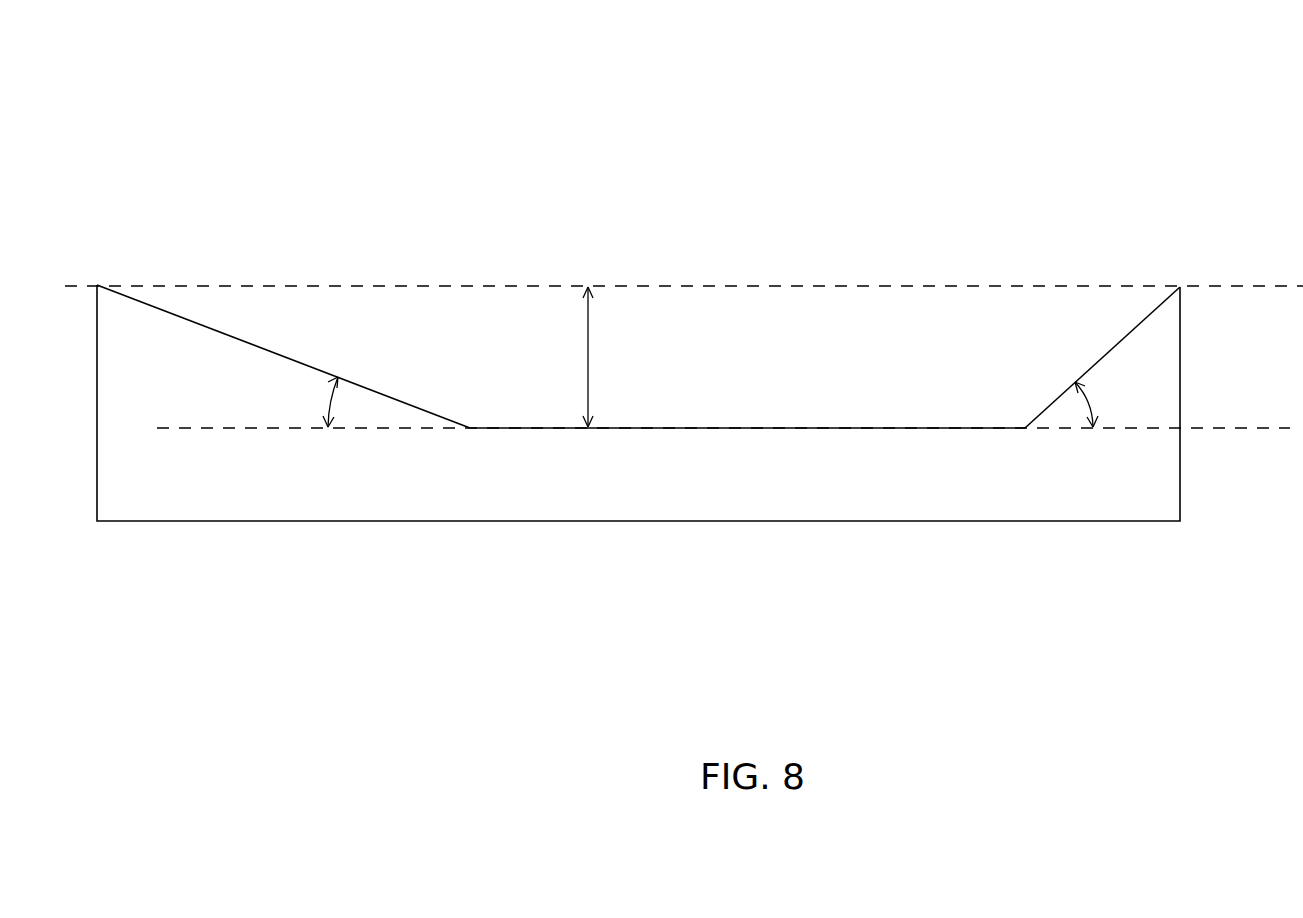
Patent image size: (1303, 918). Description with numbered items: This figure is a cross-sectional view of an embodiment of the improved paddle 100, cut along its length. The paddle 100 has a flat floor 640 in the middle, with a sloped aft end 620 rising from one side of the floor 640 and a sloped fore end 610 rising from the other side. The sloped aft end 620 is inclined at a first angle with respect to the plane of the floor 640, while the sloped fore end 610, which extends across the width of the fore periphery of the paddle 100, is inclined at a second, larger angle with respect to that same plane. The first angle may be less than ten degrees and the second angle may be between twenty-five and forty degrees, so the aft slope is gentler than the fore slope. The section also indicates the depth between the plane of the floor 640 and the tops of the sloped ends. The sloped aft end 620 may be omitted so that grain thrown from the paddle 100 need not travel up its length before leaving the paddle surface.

The paddle 100 is at (752, 138).
The sloped fore end 610 is at (1122, 342).
The sloped aft end 620 is at (262, 347).
The floor 640 is at (838, 428).